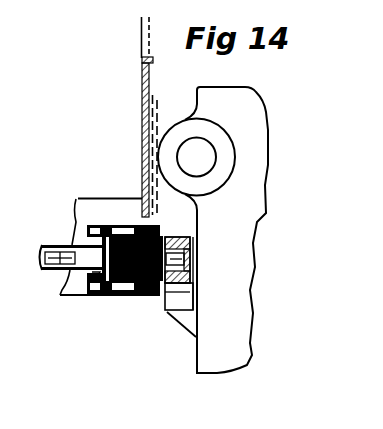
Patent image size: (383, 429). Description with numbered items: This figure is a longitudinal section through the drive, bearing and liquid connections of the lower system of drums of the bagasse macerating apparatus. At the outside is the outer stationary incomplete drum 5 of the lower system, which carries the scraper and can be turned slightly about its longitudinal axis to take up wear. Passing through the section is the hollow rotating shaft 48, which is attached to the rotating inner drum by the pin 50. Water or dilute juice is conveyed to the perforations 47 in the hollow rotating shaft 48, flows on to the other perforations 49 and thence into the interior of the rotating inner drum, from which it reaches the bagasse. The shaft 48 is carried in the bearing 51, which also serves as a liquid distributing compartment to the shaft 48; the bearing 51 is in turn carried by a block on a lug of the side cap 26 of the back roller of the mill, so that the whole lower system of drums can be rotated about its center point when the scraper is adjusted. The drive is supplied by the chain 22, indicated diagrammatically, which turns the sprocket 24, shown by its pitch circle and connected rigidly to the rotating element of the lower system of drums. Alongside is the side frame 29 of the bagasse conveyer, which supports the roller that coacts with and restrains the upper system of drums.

The outer stationary incomplete drum 5 is at (100, 297).
The chain 22 is at (159, 98).
The sprocket 24 is at (153, 297).
The side cap 26 is at (213, 230).
The side frame 29 is at (140, 94).
The perforations 47 is at (184, 259).
The hollow rotating shaft 48 is at (146, 259).
The perforations 49 is at (72, 243).
The pin 50 is at (121, 260).
The bearing 51 is at (191, 241).